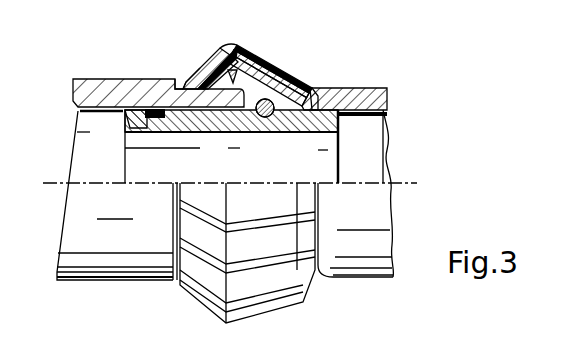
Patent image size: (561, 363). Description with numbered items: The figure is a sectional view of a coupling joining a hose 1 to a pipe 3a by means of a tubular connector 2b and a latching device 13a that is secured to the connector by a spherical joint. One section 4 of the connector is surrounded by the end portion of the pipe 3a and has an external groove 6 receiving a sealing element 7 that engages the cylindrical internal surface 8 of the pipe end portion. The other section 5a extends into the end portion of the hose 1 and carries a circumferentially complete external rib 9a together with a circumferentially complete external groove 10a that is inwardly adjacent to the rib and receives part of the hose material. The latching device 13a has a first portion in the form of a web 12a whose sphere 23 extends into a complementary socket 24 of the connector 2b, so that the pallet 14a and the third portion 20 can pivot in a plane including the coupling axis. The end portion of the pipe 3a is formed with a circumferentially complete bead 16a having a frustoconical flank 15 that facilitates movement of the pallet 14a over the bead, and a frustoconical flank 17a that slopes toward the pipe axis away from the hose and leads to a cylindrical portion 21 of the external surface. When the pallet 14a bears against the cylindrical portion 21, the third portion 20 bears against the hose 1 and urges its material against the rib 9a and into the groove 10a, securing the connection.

The hose 1 is at (371, 87).
The connector 2b is at (220, 137).
The pipe 3a is at (112, 77).
The section of the connector 4 is at (162, 133).
The section of the connector 5a is at (300, 133).
The external groove 6 is at (137, 115).
The sealing element 7 is at (147, 130).
The cylindrical internal surface 8 is at (80, 115).
The external rib 9a is at (342, 90).
The external groove 10a is at (324, 137).
The web 12a is at (288, 79).
The latching device 13a is at (263, 52).
The pallet 14a is at (214, 67).
The frustoconical flank 15 is at (278, 62).
The bead 16a is at (233, 78).
The frustoconical flank 17a is at (192, 71).
The third portion of the latching device 20 is at (314, 76).
The cylindrical portion 21 is at (177, 80).
The sphere 23 is at (272, 133).
The socket 24 is at (253, 135).